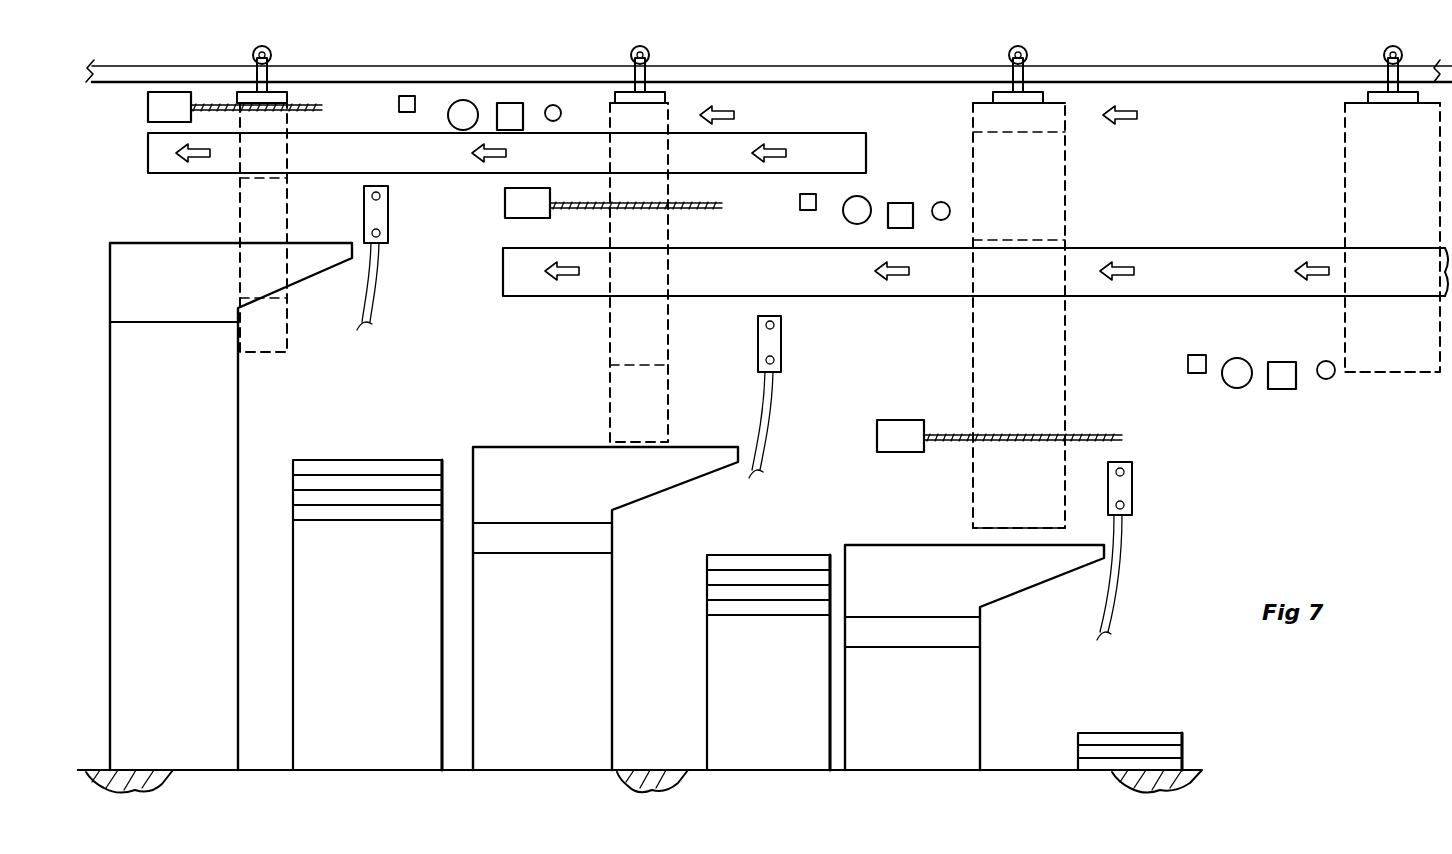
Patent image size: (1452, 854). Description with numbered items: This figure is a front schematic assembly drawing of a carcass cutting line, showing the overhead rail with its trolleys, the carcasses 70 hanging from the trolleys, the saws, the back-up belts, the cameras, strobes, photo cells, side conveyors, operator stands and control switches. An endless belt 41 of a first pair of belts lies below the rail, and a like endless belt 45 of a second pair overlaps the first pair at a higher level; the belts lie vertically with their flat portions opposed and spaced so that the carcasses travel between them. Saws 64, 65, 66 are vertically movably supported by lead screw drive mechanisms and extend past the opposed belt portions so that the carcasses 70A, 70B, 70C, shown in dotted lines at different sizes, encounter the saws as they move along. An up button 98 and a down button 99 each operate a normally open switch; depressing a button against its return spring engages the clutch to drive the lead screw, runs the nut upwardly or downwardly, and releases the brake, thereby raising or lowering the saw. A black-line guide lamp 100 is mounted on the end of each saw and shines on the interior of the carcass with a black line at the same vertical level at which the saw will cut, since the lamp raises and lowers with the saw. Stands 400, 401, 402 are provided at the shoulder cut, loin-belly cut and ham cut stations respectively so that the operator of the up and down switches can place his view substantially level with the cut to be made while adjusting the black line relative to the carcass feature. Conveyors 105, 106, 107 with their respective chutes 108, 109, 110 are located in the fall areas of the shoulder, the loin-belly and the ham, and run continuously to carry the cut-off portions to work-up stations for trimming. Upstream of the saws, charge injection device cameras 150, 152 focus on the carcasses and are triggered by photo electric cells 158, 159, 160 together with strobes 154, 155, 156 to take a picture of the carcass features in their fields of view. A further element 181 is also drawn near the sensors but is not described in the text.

The endless belt 41 is at (1165, 298).
The endless belt 45 is at (292, 175).
The saw 64 is at (876, 436).
The saw 65 is at (504, 200).
The saw 66 is at (147, 104).
The carcass 70 is at (1344, 148).
The carcass 70A is at (1066, 192).
The carcass 70B is at (669, 240).
The carcass 70C is at (287, 236).
The up button 98 is at (380, 196).
The down button 99 is at (380, 233).
The black-line guide lamp 100 is at (398, 102).
The conveyor 105 is at (982, 697).
The conveyor 106 is at (613, 618).
The conveyor 107 is at (110, 465).
The chute 108 is at (890, 545).
The chute 109 is at (505, 447).
The chute 110 is at (150, 243).
The charge injection device camera 150 is at (1228, 386).
The charge injection device camera 152 is at (440, 118).
The strobe 154 is at (1282, 390).
The strobe 155 is at (898, 202).
The strobe 156 is at (510, 102).
The photo electric cell 158 is at (1330, 379).
The photo electric cell 159 is at (941, 202).
The photo electric cell 160 is at (561, 115).
The sensor 181 is at (853, 224).
The stand 400 is at (1178, 750).
The stand 401 is at (712, 708).
The stand 402 is at (292, 710).